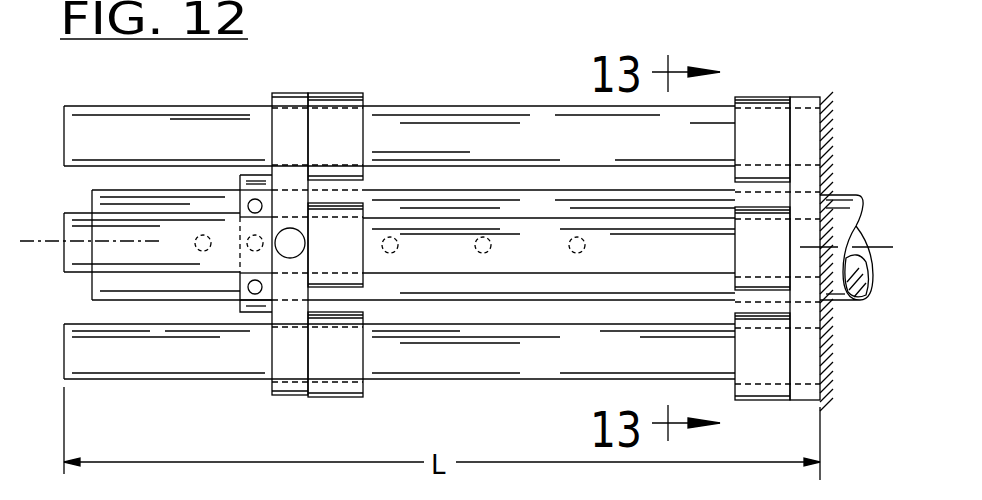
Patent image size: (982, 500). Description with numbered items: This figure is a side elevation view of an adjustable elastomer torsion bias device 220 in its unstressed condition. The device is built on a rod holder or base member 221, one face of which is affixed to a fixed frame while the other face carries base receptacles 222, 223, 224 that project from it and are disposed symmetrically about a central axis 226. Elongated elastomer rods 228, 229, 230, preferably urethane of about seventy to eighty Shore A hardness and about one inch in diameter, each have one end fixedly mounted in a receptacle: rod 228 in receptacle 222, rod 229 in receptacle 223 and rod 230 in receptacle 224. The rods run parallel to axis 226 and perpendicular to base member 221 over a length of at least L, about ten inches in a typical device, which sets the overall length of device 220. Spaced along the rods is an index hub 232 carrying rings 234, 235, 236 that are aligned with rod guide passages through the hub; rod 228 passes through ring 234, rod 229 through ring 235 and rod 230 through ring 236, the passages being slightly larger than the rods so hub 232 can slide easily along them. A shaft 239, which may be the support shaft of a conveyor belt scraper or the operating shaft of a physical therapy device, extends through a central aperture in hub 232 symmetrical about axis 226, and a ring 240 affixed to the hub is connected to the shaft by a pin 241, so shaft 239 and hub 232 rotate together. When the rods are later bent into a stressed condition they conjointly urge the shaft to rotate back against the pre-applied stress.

The adjustable elastomer torsion bias device 220 is at (542, 93).
The base member 221 is at (806, 120).
The base receptacle 222 is at (765, 130).
The base receptacle 223 is at (760, 233).
The base receptacle 224 is at (760, 370).
The central axis 226 is at (23, 240).
The elastomer rod 228 is at (506, 145).
The elastomer rod 229 is at (510, 260).
The elastomer rod 230 is at (413, 358).
The index hub 232 is at (290, 93).
The ring 234 is at (347, 125).
The ring 235 is at (350, 240).
The ring 236 is at (328, 400).
The shaft 239 is at (100, 282).
The ring 240 is at (257, 175).
The pin 241 is at (250, 248).